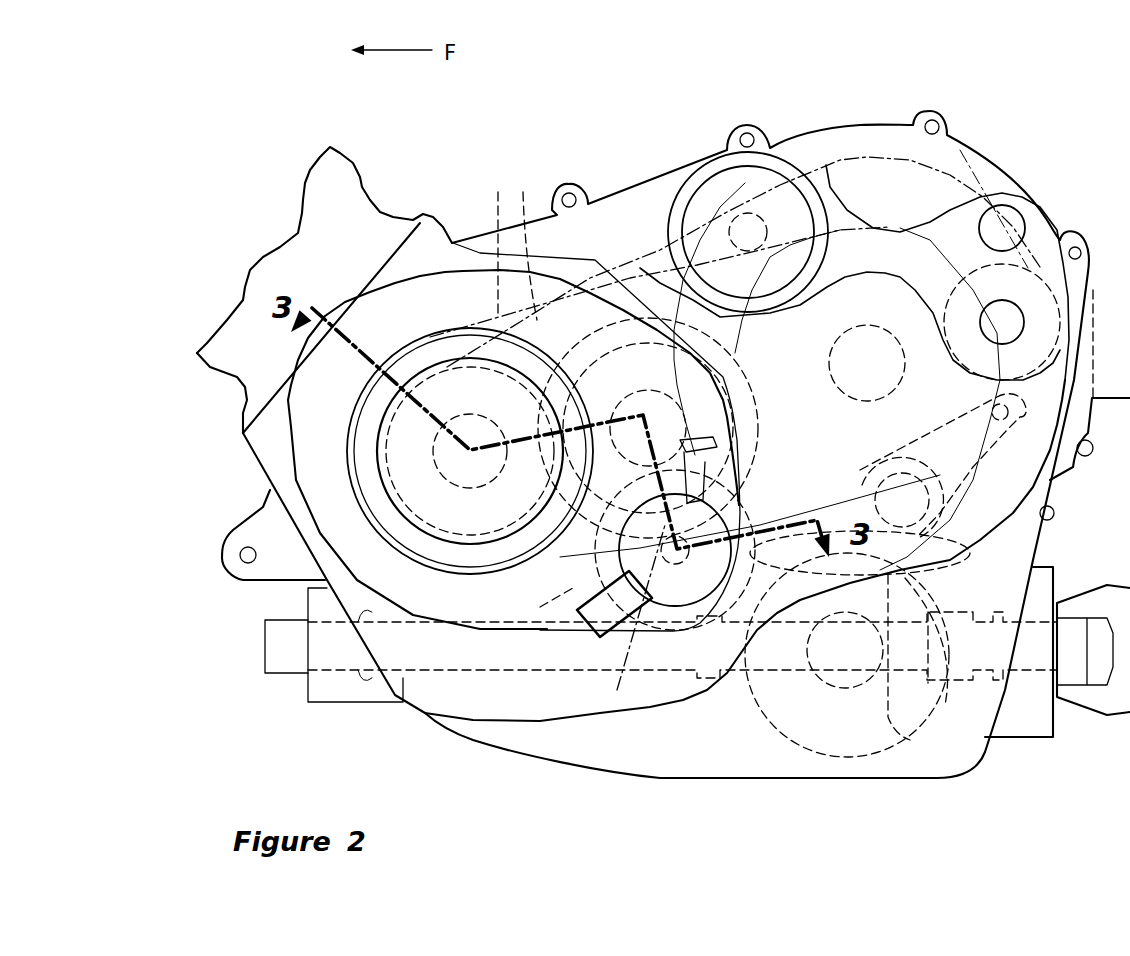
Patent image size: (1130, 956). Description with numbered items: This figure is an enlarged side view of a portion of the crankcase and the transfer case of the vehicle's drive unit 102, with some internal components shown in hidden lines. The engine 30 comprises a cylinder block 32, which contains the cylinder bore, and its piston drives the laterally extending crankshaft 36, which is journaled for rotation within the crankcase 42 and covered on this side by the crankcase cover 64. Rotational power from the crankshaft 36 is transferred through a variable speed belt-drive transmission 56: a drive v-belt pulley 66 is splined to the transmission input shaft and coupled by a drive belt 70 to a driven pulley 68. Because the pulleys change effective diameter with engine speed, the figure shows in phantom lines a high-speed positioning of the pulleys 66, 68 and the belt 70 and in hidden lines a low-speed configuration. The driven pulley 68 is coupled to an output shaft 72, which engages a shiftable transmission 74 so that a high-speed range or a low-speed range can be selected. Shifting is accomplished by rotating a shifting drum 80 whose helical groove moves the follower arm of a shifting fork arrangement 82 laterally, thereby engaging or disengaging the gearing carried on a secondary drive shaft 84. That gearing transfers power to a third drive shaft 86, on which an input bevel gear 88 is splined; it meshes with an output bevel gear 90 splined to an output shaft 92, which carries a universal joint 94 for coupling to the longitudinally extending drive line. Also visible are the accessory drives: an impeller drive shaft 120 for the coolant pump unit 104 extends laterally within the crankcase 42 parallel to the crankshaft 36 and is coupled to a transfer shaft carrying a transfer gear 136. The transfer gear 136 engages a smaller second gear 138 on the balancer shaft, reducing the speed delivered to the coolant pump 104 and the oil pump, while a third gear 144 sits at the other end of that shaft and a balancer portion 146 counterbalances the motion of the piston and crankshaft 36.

The engine 30 is at (443, 295).
The cylinder block 32 is at (353, 203).
The crankshaft 36 is at (433, 448).
The crankcase 42 is at (510, 737).
The variable speed belt-drive transmission 56 is at (752, 241).
The crankcase cover 64 is at (682, 679).
The drive v-belt pulley 66 is at (343, 423).
The driven pulley 68 is at (890, 227).
The drive belt 70 is at (517, 248).
The output shaft 72 is at (860, 327).
The shiftable transmission 74 is at (993, 474).
The shifting drum 80 is at (1034, 266).
The shifting fork arrangement 82 is at (910, 433).
The secondary drive shaft 84 is at (857, 483).
The third drive shaft 86 is at (840, 687).
The input bevel gear 88 is at (777, 727).
The output bevel gear 90 is at (890, 717).
The output shaft 92 is at (958, 683).
The universal joint 94 is at (1098, 578).
The drive unit 102 is at (441, 733).
The coolant pump unit 104 is at (671, 596).
The impeller drive shaft 120 is at (621, 616).
The transfer gear 136 is at (465, 634).
The second gear 138 is at (700, 390).
The third gear 144 is at (710, 347).
The balancer portion 146 is at (700, 423).